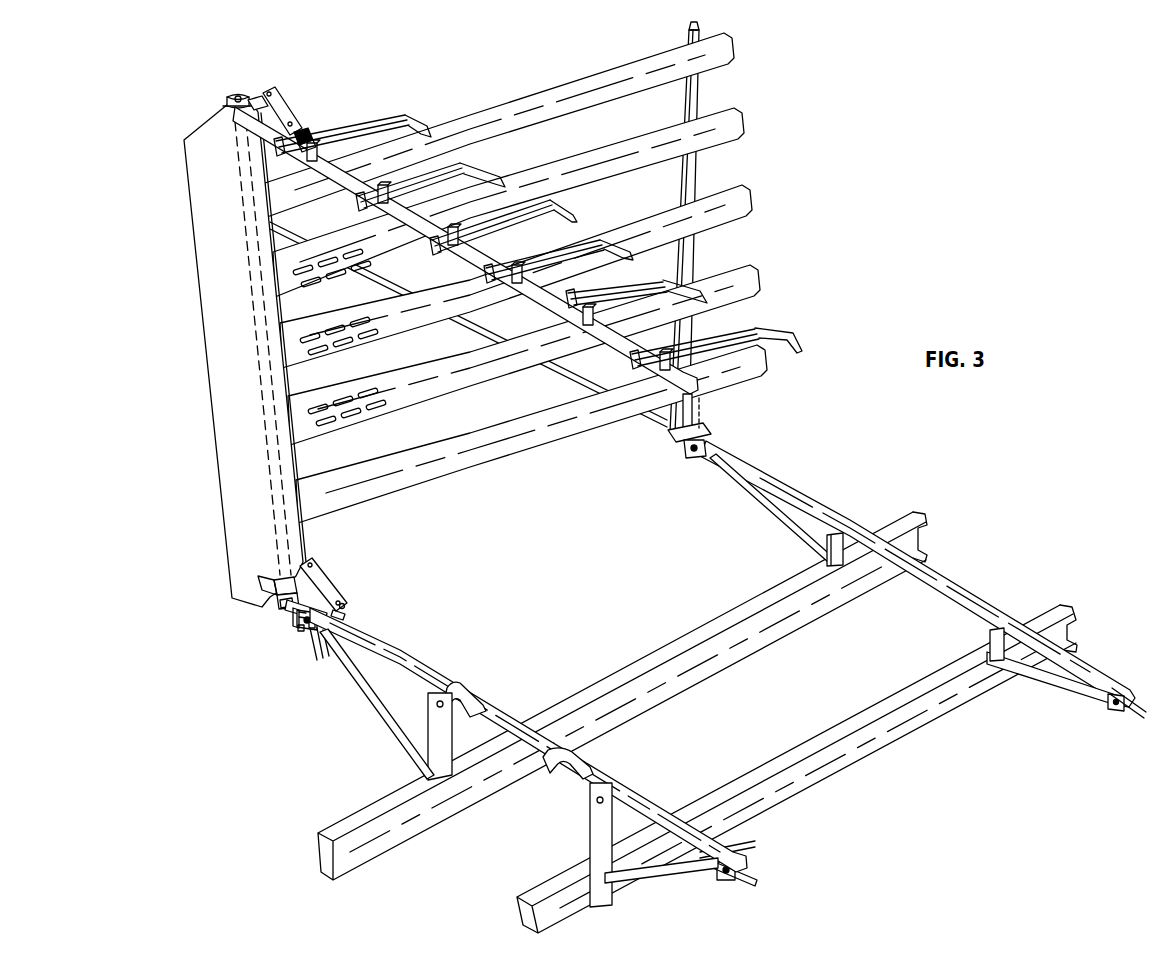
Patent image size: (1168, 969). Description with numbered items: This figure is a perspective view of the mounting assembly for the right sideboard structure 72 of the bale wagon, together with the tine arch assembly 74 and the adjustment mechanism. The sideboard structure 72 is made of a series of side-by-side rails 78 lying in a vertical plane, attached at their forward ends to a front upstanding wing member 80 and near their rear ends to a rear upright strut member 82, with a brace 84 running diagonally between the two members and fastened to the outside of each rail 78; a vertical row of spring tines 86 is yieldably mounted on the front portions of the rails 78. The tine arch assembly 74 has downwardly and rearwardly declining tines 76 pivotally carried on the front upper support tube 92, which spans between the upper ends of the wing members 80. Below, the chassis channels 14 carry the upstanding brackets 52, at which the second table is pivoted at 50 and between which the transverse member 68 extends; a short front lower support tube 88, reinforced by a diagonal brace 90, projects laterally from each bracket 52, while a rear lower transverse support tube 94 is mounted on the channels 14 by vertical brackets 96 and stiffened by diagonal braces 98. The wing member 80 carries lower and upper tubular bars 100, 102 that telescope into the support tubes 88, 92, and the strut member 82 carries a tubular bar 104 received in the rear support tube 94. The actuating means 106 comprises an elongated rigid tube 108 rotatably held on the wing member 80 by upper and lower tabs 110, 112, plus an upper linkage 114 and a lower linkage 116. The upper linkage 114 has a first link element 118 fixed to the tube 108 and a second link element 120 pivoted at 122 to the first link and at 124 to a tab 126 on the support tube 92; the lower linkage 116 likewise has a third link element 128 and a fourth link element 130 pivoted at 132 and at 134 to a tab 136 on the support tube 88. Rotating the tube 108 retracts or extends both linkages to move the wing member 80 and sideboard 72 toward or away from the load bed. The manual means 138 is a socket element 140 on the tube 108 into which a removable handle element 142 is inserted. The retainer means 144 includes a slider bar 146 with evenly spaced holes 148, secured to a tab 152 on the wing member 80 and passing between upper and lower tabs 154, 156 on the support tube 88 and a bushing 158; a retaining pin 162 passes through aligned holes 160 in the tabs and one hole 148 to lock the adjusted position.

The longitudinally extending channels 14 is at (720, 668).
The pivot 50 is at (437, 708).
The upstanding brackets 52 is at (479, 800).
The transverse member 68 is at (508, 715).
The sideboard structure 72 is at (457, 314).
The tine arch assembly 74 is at (726, 562).
The tines 76 is at (418, 118).
The rails 78 is at (553, 116).
The front upstanding wing member 80 is at (209, 340).
The rear upright strut member 82 is at (698, 173).
The brace 84 is at (552, 390).
The spring tines 86 is at (345, 340).
The front lower support tube 88 is at (528, 740).
The diagonal brace 90 is at (378, 717).
The front upper support tube 92 is at (497, 237).
The rear lower transverse support tube 94 is at (967, 590).
The vertical brackets 96 is at (990, 637).
The diagonal braces 98 is at (767, 508).
The lower tubular bar 100 is at (346, 600).
The upper tubular bar 102 is at (301, 87).
The tubular bar 104 is at (725, 424).
The actuating means 106 is at (313, 311).
The elongated rigid tube 108 is at (250, 303).
The upper tab 110 is at (226, 101).
The lower tab 112 is at (280, 592).
The upper linkage 114 is at (228, 84).
The lower linkage 116 is at (648, 682).
The first link element 118 is at (254, 95).
The second link element 120 is at (292, 110).
The pivotal connection 122 is at (270, 88).
The pivotal interconnection 124 is at (296, 126).
The tab 126 is at (306, 140).
The third link element 128 is at (293, 578).
The fourth link element 130 is at (343, 598).
The pivotal connection 132 is at (310, 565).
The pivotal interconnection 134 is at (346, 606).
The tab 136 is at (338, 614).
The manual means 138 is at (256, 580).
The socket element 140 is at (278, 596).
The handle element 142 is at (284, 594).
The retainer means 144 is at (648, 682).
The slider bar 146 is at (303, 618).
The holes 148 is at (543, 743).
The tab 152 is at (290, 602).
The upper tab 154 is at (309, 631).
The lower tab 156 is at (307, 628).
The bushing 158 is at (303, 623).
The holes 160 is at (713, 448).
The retaining pin 162 is at (699, 425).